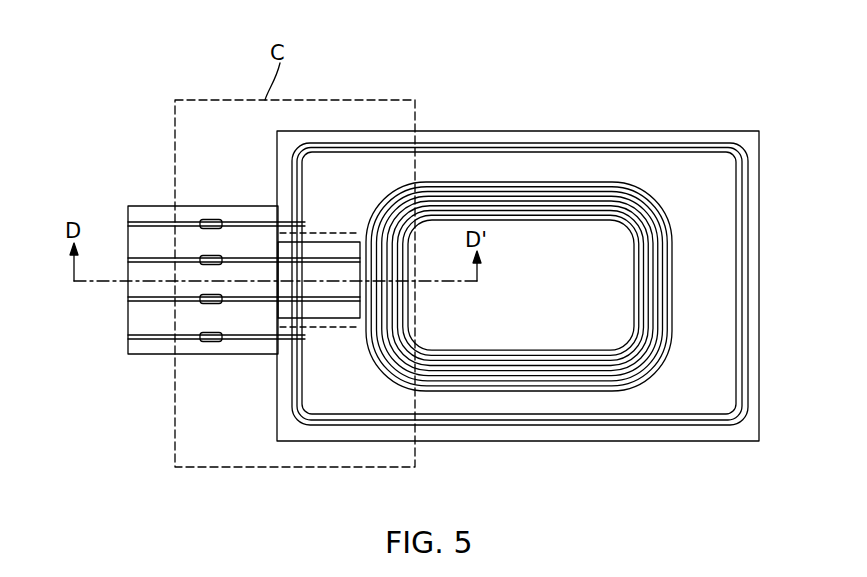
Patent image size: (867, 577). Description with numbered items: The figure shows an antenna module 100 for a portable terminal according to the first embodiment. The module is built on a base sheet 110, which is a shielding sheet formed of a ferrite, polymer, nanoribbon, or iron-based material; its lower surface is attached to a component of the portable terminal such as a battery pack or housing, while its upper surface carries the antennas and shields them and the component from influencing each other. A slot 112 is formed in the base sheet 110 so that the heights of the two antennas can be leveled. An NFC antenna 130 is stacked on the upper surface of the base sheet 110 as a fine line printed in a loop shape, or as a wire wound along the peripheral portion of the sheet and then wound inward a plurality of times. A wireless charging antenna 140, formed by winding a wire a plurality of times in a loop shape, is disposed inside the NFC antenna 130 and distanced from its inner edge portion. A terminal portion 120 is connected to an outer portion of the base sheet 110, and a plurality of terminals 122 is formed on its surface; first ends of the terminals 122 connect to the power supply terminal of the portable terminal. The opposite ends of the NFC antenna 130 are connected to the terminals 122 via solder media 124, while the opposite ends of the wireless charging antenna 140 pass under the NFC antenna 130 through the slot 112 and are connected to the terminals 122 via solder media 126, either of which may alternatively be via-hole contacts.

The antenna module 100 is at (752, 103).
The base sheet 110 is at (708, 387).
The slot 112 is at (330, 242).
The terminal portion 120 is at (135, 353).
The terminals 122 is at (128, 226).
The solder media 124 is at (210, 219).
The solder media 126 is at (207, 291).
The NFC antenna 130 is at (748, 332).
The wireless charging antenna 140 is at (523, 185).